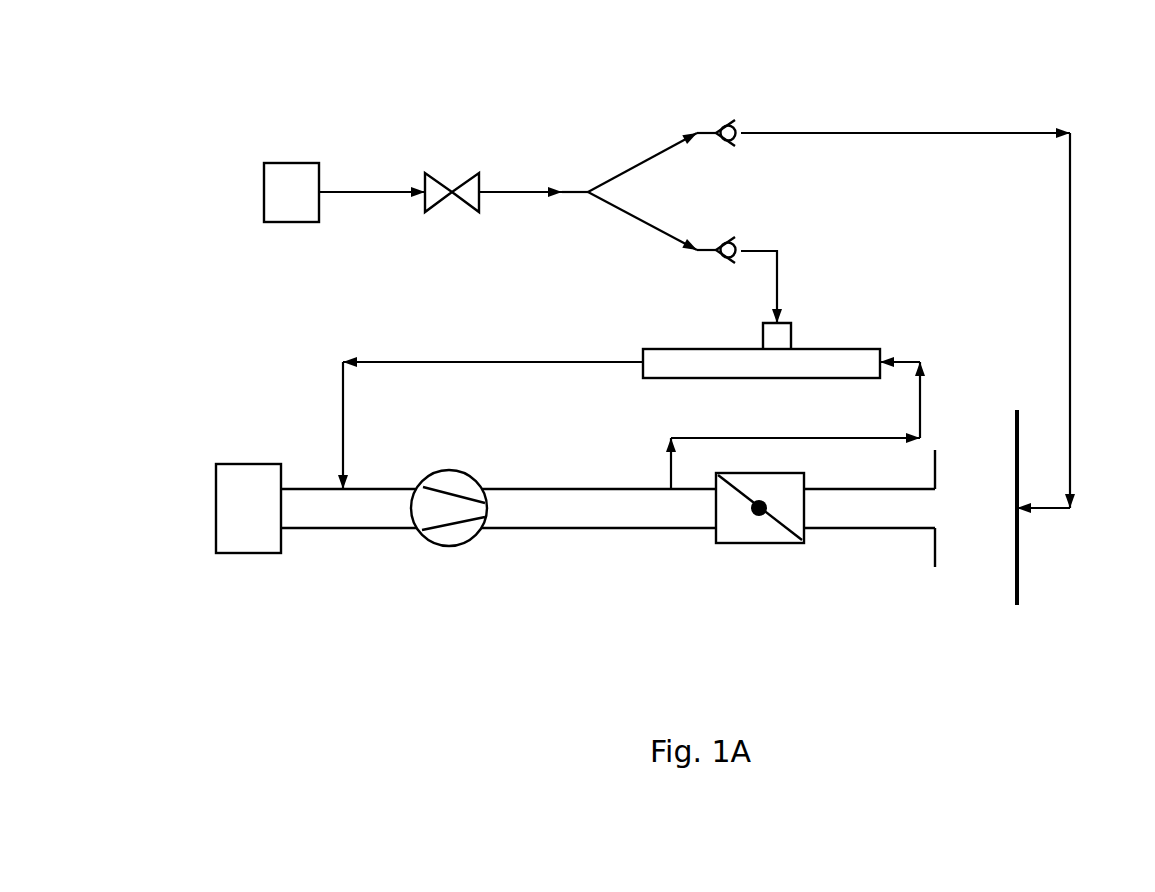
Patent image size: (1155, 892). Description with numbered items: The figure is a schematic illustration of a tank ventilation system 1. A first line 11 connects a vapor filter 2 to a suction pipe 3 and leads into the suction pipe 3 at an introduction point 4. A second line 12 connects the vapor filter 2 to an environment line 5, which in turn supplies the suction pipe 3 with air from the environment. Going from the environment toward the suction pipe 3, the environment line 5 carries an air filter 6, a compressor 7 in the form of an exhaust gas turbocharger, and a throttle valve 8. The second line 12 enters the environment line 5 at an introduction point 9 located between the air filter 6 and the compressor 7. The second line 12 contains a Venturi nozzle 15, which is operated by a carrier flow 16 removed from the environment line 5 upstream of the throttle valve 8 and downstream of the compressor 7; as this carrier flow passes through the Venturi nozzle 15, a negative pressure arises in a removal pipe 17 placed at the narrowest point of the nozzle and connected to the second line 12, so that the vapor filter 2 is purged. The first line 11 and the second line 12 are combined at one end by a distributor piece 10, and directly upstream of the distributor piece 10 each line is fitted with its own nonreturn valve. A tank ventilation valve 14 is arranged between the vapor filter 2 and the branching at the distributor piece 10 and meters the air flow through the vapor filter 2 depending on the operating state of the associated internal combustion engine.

The tank ventilation system 1 is at (287, 286).
The vapor filter 2 is at (297, 178).
The suction pipe 3 is at (966, 553).
The introduction point 4 is at (1019, 510).
The environment line 5 is at (564, 519).
The air filter 6 is at (257, 528).
The compressor 7 is at (447, 543).
The throttle valve 8 is at (754, 543).
The introduction point 9 is at (345, 482).
The distributor piece 10 is at (577, 192).
The first line 11 is at (640, 163).
The second line 12 is at (640, 220).
The tank ventilation valve 14 is at (437, 185).
The Venturi nozzle 15 is at (830, 349).
The carrier flow 16 is at (753, 438).
The removal pipe 17 is at (787, 325).